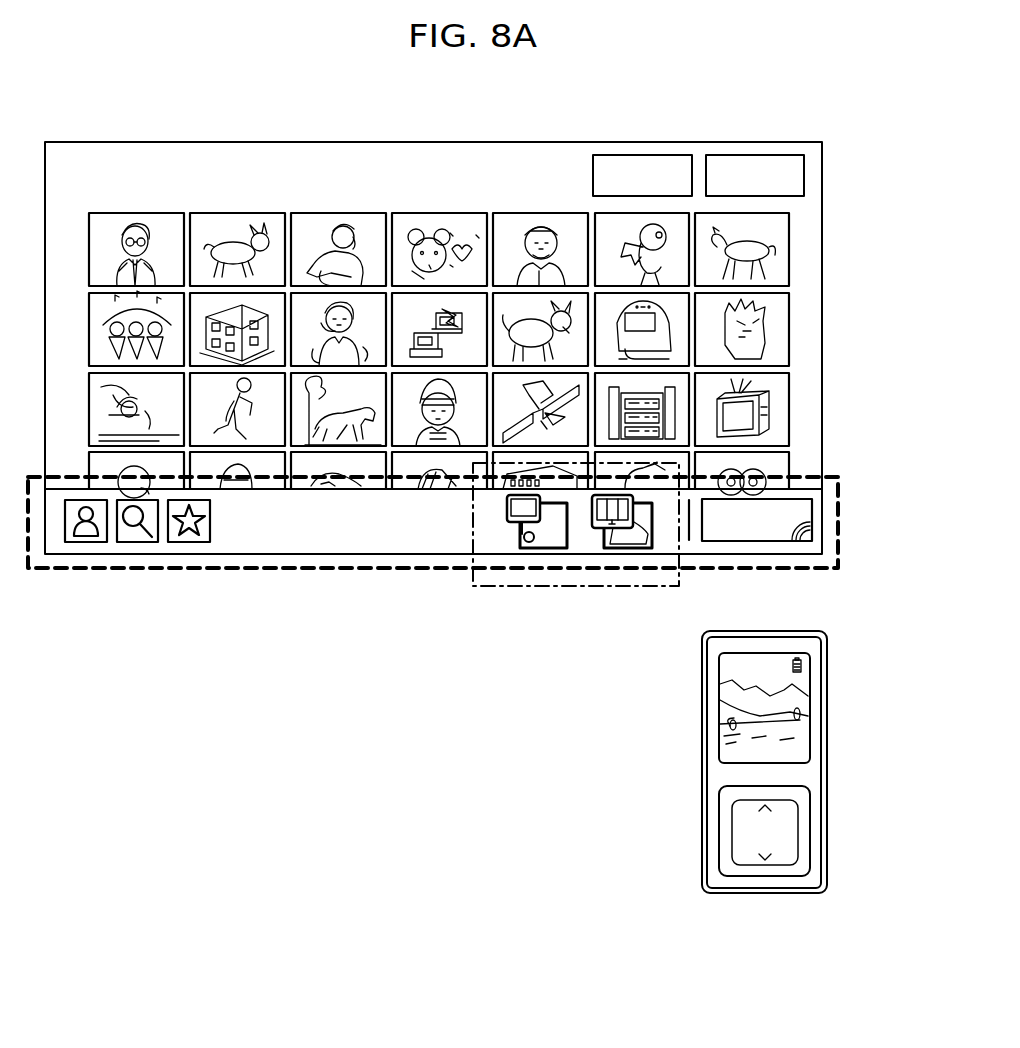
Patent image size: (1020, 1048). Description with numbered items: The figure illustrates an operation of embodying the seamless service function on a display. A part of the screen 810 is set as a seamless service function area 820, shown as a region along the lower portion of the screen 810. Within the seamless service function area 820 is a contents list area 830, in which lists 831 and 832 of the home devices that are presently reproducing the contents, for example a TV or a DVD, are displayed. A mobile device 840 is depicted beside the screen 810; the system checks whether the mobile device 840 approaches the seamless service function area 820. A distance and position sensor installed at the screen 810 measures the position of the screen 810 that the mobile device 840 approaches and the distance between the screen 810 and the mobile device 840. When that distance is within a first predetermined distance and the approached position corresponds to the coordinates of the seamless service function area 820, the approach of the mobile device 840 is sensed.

The screen 810 is at (822, 333).
The seamless service function area 820 is at (838, 520).
The contents list area 830 is at (484, 587).
The list of home devices 831 is at (542, 549).
The list of home devices 832 is at (627, 549).
The mobile device 840 is at (827, 762).